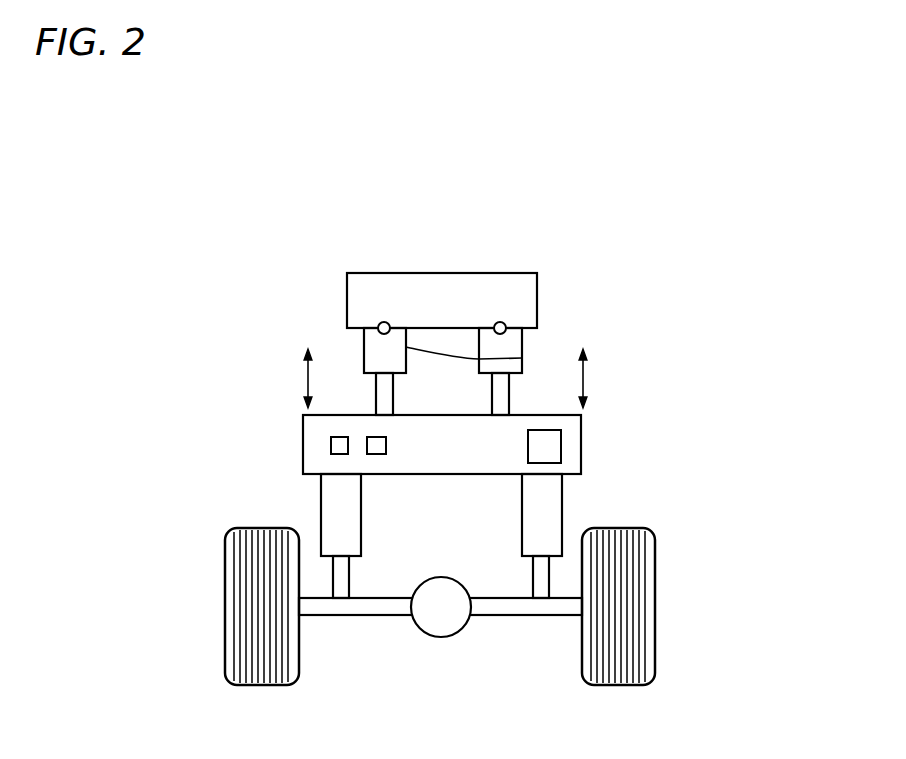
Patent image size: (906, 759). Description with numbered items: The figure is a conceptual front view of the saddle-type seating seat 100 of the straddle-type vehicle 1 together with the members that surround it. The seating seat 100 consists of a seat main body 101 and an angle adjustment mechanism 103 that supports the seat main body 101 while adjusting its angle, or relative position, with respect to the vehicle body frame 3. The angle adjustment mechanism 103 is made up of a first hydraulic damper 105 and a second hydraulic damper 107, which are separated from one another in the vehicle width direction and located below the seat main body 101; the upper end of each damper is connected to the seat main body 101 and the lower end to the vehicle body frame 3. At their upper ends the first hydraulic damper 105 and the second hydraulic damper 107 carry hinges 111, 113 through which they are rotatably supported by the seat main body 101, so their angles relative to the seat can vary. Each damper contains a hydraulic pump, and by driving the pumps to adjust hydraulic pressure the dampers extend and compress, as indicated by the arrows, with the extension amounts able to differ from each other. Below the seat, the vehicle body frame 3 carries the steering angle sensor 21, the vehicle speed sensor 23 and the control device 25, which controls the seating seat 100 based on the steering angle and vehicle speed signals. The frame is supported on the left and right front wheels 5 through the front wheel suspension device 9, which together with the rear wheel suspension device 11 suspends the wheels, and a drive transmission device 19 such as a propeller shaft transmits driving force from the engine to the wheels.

The straddle-type vehicle 1 is at (292, 232).
The vehicle body frame 3 is at (581, 427).
The front wheels 5 is at (225, 611).
The front wheel suspension device 9 is at (439, 536).
The rear wheel suspension device 11 is at (321, 504).
The drive transmission device 19 is at (444, 637).
The steering angle sensor 21 is at (331, 446).
The vehicle speed sensor 23 is at (377, 455).
The control device 25 is at (561, 448).
The seating seat 100 is at (712, 231).
The seat main body 101 is at (537, 302).
The angle adjustment mechanism 103 is at (651, 276).
The first hydraulic damper 105 is at (522, 345).
The second hydraulic damper 107 is at (522, 358).
The hinge 111 is at (502, 321).
The hinge 113 is at (388, 321).